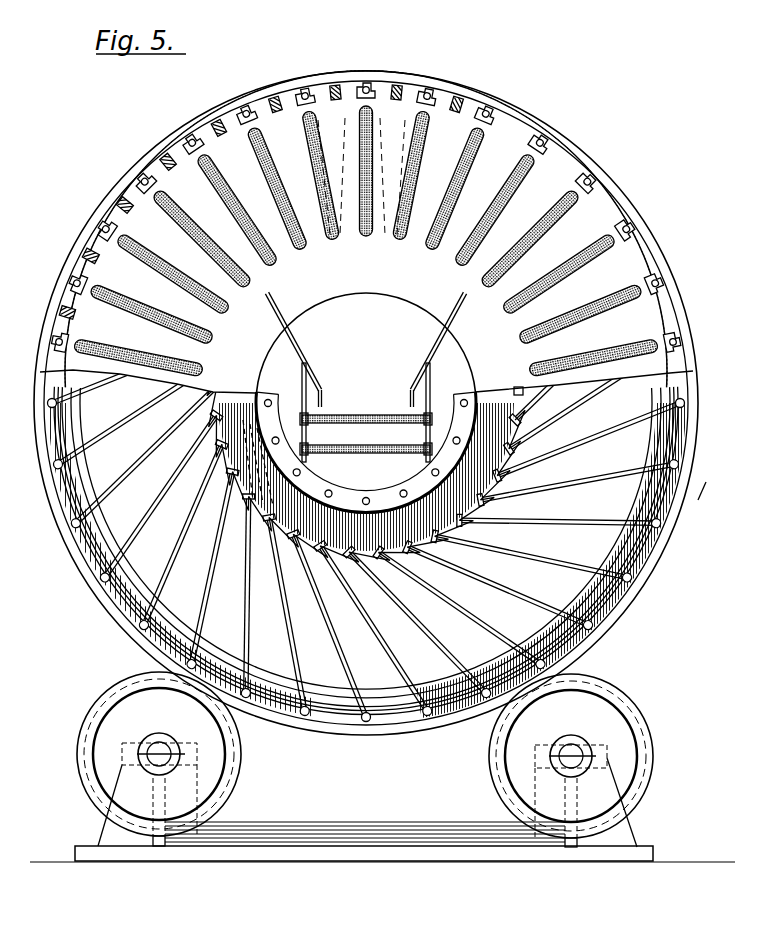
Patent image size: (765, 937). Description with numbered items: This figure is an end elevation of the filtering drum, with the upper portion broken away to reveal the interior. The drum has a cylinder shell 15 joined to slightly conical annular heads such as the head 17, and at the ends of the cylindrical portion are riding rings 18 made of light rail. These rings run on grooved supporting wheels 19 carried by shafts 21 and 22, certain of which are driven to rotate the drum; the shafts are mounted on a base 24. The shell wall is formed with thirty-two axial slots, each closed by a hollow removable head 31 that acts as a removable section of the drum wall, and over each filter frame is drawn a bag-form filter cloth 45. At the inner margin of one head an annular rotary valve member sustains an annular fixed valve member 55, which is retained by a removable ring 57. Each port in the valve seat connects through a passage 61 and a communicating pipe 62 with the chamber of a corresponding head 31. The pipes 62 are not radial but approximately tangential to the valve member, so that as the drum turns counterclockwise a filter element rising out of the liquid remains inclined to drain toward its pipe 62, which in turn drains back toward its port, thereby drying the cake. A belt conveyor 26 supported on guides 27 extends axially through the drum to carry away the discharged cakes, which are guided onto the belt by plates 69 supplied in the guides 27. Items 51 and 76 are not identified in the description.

The cylinder shell 15 is at (562, 163).
The riding ring 18 is at (668, 264).
The hollow removable head 31 is at (430, 90).
The pipe 62 is at (487, 116).
The spoke 76 is at (566, 466).
The spoke attachment brackets 51 is at (360, 572).
The passage 61 is at (254, 504).
The fixed valve member 55 is at (333, 508).
The filter cloth 45 is at (232, 202).
The annular head 17 is at (398, 283).
The removable ring 57 is at (316, 488).
The plate 69 is at (440, 352).
The belt conveyor 26 is at (338, 446).
The guide 27 is at (403, 424).
The grooved supporting wheel 19 is at (218, 764).
The shaft 21 is at (160, 752).
The shaft 22 is at (570, 755).
The base 24 is at (366, 833).